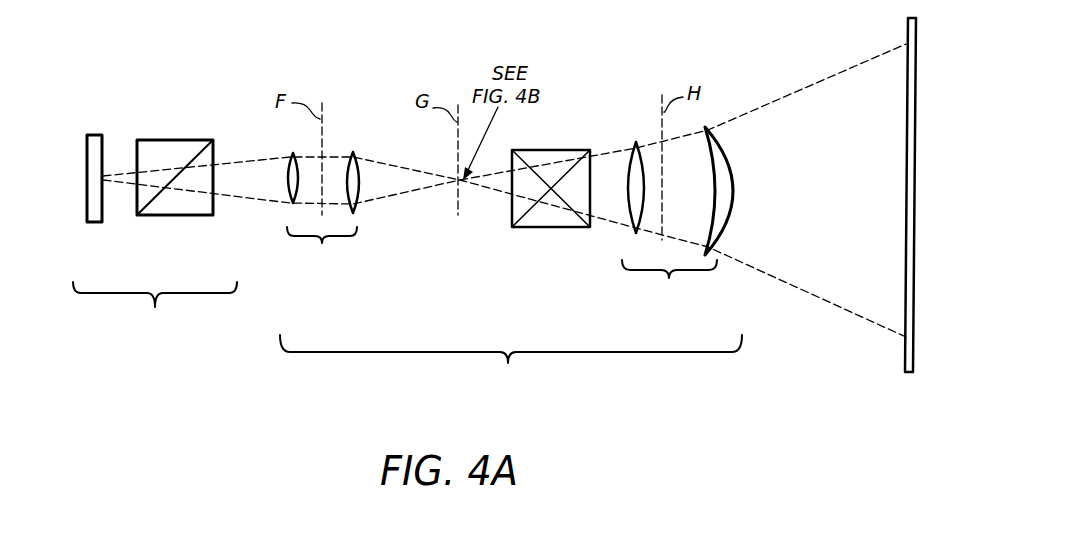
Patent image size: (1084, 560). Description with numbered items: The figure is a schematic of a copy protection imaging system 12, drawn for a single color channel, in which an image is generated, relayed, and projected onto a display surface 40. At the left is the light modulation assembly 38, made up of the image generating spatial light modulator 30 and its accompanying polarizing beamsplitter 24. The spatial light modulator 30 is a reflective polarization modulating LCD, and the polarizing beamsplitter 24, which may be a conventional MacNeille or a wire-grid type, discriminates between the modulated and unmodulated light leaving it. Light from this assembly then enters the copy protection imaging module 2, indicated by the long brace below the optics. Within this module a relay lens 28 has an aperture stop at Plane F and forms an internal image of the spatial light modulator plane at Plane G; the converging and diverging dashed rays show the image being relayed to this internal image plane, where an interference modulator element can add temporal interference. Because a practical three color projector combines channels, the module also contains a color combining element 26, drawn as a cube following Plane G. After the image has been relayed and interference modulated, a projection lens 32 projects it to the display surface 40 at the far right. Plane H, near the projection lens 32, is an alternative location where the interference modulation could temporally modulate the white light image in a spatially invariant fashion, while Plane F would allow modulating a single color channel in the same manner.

The copy protection imaging module 2 is at (511, 364).
The copy protection imaging system 12 is at (202, 368).
The polarizing beamsplitter 24 is at (170, 215).
The color combining element 26 is at (567, 150).
The relay lens 28 is at (323, 212).
The spatial light modulator 30 is at (103, 145).
The projection lens 32 is at (677, 220).
The light modulation assembly 38 is at (155, 310).
The display surface 40 is at (906, 347).